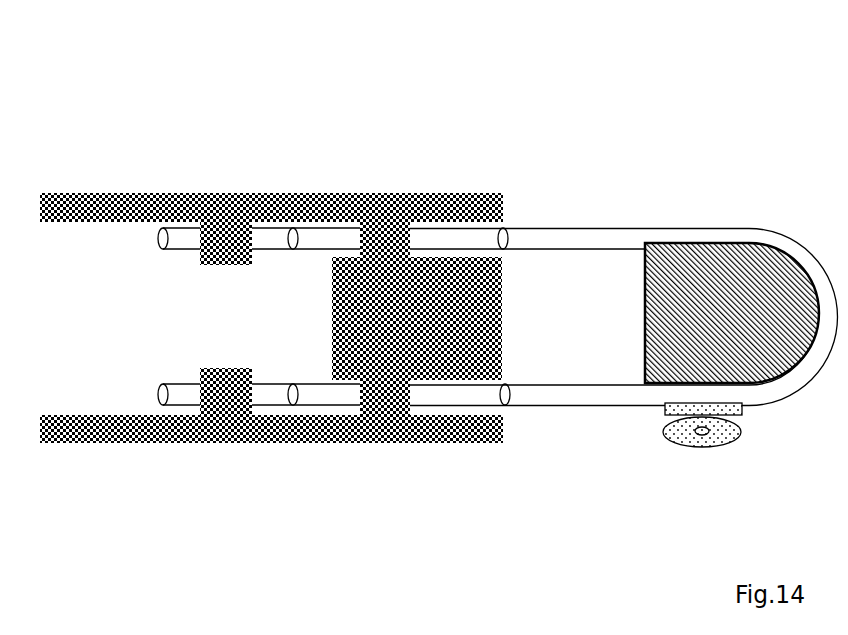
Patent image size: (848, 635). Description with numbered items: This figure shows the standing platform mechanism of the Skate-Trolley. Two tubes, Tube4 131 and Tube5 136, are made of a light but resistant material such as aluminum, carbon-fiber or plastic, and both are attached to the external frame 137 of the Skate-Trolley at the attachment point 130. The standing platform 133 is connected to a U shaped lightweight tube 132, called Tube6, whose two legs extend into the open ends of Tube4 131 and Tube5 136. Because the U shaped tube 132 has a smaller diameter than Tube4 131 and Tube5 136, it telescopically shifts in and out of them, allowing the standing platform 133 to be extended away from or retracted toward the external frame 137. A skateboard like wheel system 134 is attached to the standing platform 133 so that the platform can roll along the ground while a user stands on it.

The attachment point 130 is at (228, 250).
The Tube4 131 is at (268, 240).
The U shaped lightweight tube (Tube6) 132 is at (545, 238).
The standing platform 133 is at (743, 258).
The skateboard like wheel system 134 is at (725, 438).
The Tube5 136 is at (270, 395).
The external frame 137 is at (113, 200).